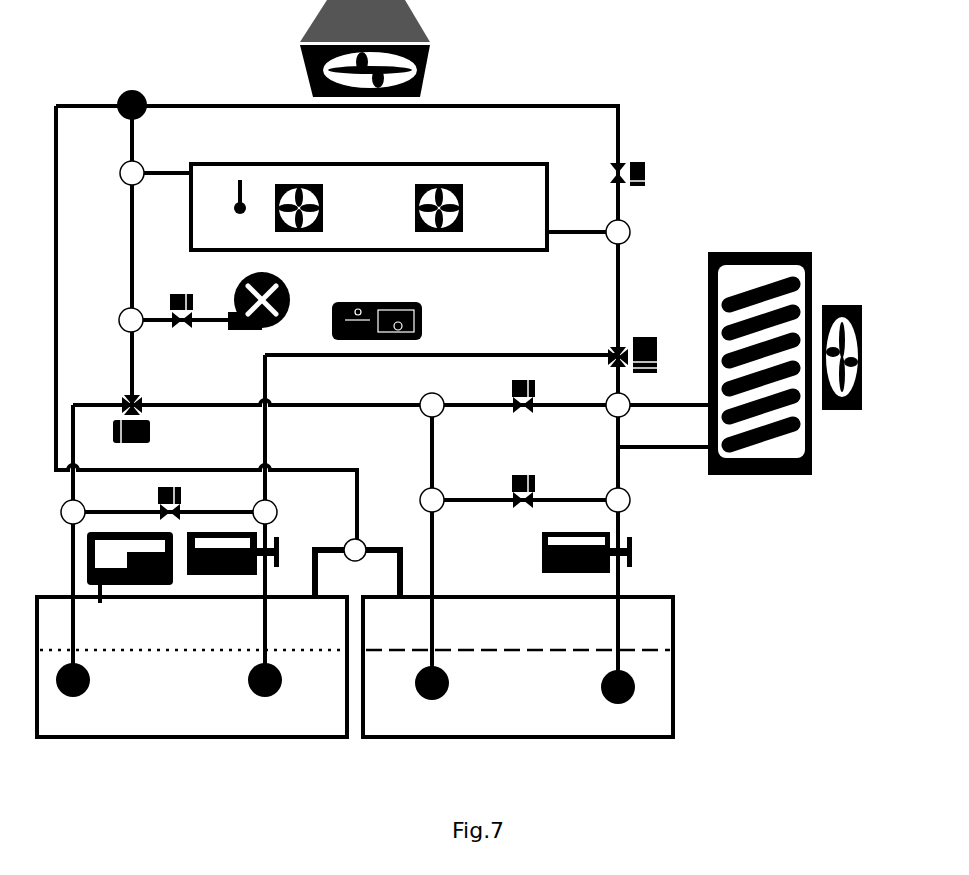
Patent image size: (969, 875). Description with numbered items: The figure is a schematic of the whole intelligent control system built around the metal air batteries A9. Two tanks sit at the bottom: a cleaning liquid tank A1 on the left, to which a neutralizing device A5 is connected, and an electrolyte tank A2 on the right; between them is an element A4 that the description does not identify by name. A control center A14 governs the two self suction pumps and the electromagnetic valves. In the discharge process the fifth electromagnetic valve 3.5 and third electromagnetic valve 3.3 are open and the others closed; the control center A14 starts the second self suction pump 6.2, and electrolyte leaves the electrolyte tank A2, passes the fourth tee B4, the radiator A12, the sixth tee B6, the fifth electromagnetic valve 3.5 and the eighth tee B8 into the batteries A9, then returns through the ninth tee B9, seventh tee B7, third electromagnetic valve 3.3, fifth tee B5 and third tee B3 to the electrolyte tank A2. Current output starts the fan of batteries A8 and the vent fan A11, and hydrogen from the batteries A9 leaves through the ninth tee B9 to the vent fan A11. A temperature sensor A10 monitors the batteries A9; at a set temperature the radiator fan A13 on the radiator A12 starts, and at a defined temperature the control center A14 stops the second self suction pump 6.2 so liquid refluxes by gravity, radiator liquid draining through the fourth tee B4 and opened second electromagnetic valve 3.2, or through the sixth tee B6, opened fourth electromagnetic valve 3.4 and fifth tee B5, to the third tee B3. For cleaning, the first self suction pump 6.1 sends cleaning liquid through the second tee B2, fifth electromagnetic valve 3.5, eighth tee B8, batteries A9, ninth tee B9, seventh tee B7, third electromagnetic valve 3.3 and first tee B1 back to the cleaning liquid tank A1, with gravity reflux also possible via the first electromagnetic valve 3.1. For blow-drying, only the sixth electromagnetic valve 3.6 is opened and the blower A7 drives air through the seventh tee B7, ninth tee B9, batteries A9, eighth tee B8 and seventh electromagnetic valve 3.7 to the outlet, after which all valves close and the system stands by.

The cleaning liquid tank A1 is at (192, 667).
The electrolyte tank A2 is at (518, 667).
The pump A4 is at (359, 560).
The neutralizing device A5 is at (130, 567).
The blower A7 is at (270, 301).
The fan of batteries A8 is at (448, 208).
The batteries A9 is at (369, 207).
The temperature sensor A10 is at (222, 198).
The vent fan A11 is at (389, 48).
The radiator A12 is at (760, 379).
The radiator fan A13 is at (841, 373).
The control center A14 is at (396, 321).
The first electromagnetic valve 3.1 is at (183, 503).
The second electromagnetic valve 3.2 is at (539, 491).
The third electromagnetic valve 3.3 is at (145, 419).
The fourth electromagnetic valve 3.4 is at (537, 396).
The fifth electromagnetic valve 3.5 is at (645, 355).
The sixth electromagnetic valve 3.6 is at (181, 324).
The seventh electromagnetic valve 3.7 is at (641, 174).
The first self suction pump 6.1 is at (233, 561).
The second self suction pump 6.2 is at (574, 552).
The first tee B1 is at (73, 512).
The second tee B2 is at (265, 512).
The third tee B3 is at (432, 500).
The fourth tee B4 is at (618, 500).
The fifth tee B5 is at (432, 405).
The sixth tee B6 is at (618, 405).
The seventh tee B7 is at (131, 320).
The eighth tee B8 is at (618, 232).
The ninth tee B9 is at (132, 173).